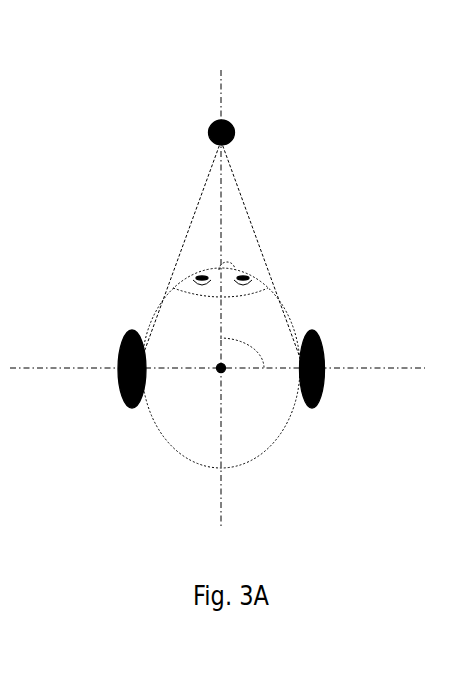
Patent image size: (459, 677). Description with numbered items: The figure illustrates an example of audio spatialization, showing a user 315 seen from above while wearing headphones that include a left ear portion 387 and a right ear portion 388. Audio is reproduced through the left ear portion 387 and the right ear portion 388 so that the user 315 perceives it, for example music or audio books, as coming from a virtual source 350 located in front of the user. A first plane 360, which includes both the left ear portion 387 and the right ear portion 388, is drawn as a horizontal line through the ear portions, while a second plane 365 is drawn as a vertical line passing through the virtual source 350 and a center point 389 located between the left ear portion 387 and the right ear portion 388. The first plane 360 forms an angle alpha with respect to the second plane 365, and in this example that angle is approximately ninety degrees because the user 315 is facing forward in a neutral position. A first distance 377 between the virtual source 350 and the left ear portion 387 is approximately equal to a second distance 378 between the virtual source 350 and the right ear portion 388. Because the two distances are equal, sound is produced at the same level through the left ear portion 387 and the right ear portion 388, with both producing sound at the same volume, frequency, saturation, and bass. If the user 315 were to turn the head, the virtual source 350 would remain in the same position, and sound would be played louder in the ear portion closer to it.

The user 315 is at (250, 433).
The virtual source 350 is at (210, 127).
The first plane 360 is at (62, 370).
The second plane 365 is at (222, 90).
The first distance 377 is at (195, 210).
The second distance 378 is at (257, 207).
The left ear portion 387 is at (118, 345).
The right ear portion 388 is at (313, 334).
The center point 389 is at (214, 374).